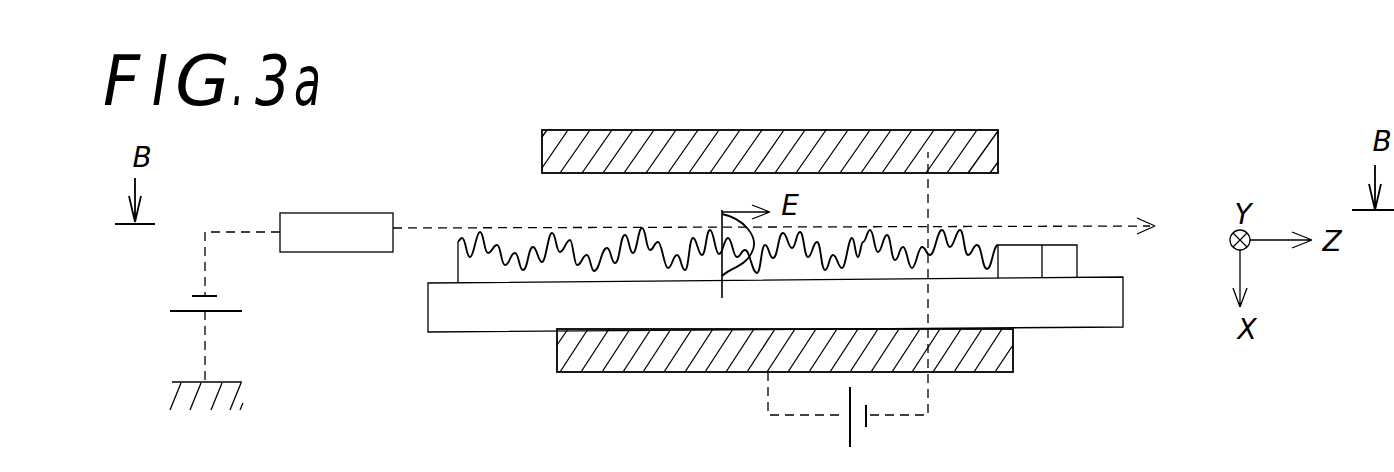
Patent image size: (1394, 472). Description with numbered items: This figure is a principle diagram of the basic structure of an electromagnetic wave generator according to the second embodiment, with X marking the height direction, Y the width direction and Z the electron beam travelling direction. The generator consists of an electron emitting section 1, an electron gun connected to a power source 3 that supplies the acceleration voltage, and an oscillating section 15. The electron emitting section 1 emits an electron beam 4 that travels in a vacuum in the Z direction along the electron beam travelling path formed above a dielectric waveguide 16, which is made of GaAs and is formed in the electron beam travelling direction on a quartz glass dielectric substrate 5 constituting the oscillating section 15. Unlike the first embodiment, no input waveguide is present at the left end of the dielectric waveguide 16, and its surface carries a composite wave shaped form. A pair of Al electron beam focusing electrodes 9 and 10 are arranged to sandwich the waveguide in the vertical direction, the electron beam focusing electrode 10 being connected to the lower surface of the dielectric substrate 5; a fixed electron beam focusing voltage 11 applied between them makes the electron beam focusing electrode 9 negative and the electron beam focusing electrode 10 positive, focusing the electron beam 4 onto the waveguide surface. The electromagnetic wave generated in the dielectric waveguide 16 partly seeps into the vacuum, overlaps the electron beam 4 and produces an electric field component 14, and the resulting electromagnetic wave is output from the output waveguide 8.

The electron emitting section 1 is at (348, 213).
The power source 3 is at (190, 297).
The electron beam 4 is at (461, 230).
The dielectric substrate 5 is at (428, 310).
The output waveguide 8 is at (1058, 258).
The electron beam focusing electrode 9 is at (848, 130).
The electron beam focusing electrode 10 is at (1003, 372).
The electron beam focusing voltage 11 is at (862, 428).
The electric field component 14 is at (722, 224).
The oscillating section 15 is at (652, 394).
The dielectric waveguide 16 is at (866, 231).